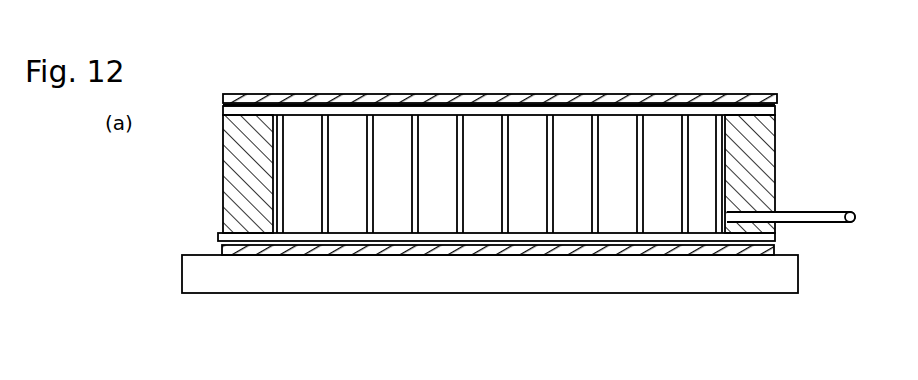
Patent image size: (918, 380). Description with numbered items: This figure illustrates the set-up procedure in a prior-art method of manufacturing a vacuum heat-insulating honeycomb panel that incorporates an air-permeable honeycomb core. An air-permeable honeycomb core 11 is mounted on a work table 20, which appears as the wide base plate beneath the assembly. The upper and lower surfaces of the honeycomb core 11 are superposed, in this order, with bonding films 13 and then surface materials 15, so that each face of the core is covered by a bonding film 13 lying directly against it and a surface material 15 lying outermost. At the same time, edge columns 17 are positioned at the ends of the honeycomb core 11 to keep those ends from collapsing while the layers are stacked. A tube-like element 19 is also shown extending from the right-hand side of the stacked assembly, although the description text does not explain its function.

The air-permeable honeycomb core 11 is at (765, 162).
The bonding film 13 is at (773, 132).
The surface material 15 is at (777, 99).
The edge column 17 is at (753, 197).
The tube 19 is at (845, 224).
The work table 20 is at (457, 278).